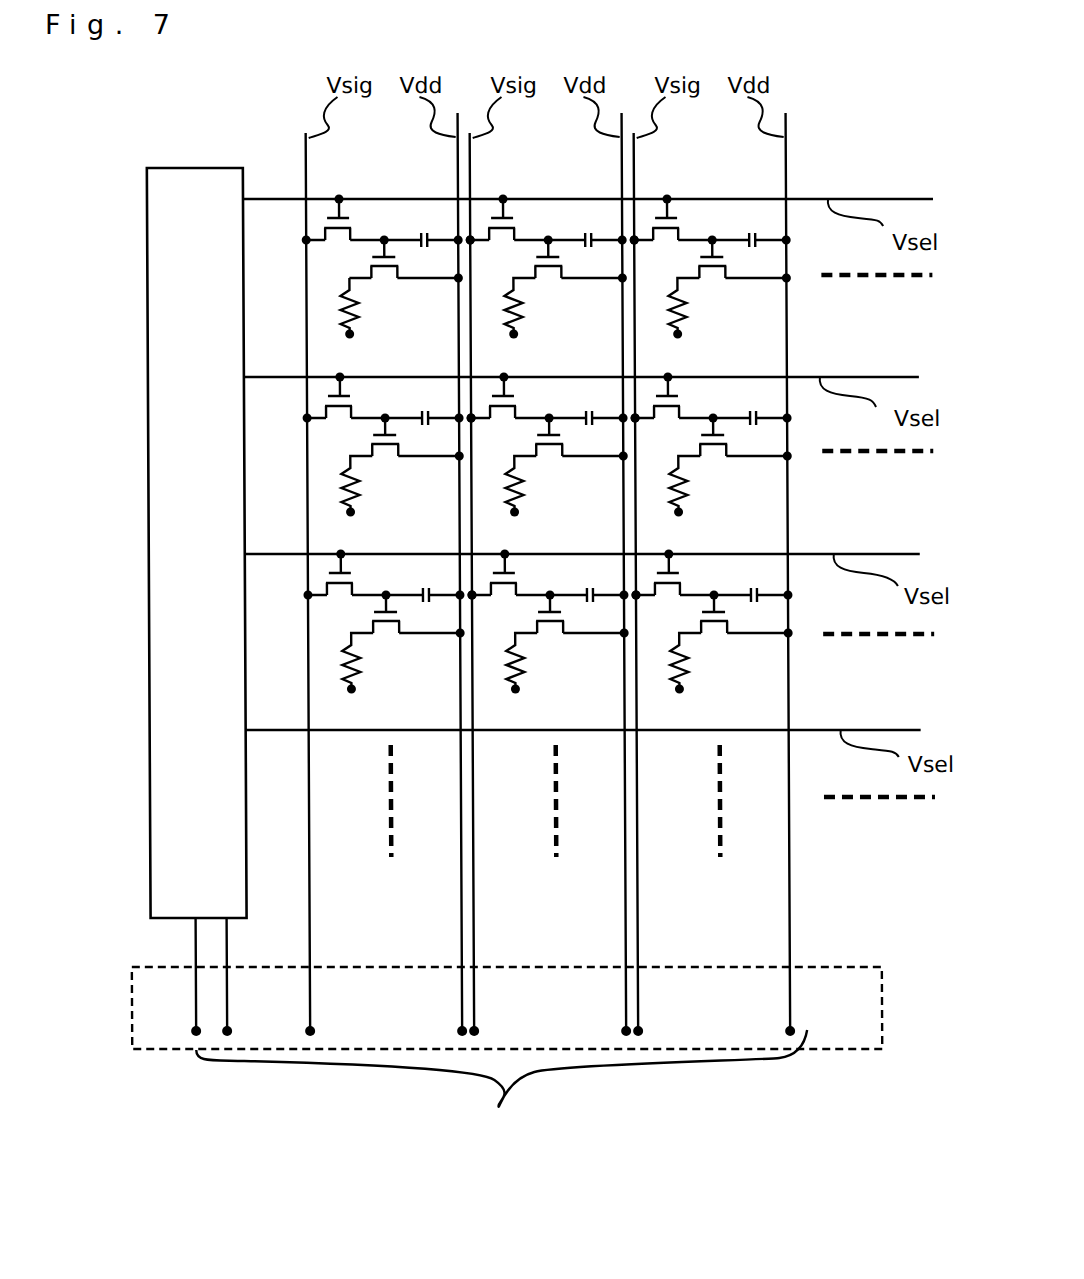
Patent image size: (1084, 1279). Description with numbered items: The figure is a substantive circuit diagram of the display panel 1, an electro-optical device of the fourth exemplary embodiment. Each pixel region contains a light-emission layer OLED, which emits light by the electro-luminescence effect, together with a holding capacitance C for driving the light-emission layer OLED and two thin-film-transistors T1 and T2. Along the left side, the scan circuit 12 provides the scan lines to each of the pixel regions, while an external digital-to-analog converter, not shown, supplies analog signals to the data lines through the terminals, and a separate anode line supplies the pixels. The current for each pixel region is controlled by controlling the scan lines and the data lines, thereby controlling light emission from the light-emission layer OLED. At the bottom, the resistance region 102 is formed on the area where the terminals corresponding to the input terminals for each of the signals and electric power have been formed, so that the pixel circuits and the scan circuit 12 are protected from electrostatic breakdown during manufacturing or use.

The display panel 1 is at (818, 136).
The scan circuit 12 is at (143, 594).
The resistance region 102 is at (128, 967).
The thin-film-transistor T1 is at (352, 196).
The thin-film-transistor T2 is at (395, 215).
The holding capacitance C is at (434, 202).
The light-emission layer OLED is at (305, 284).